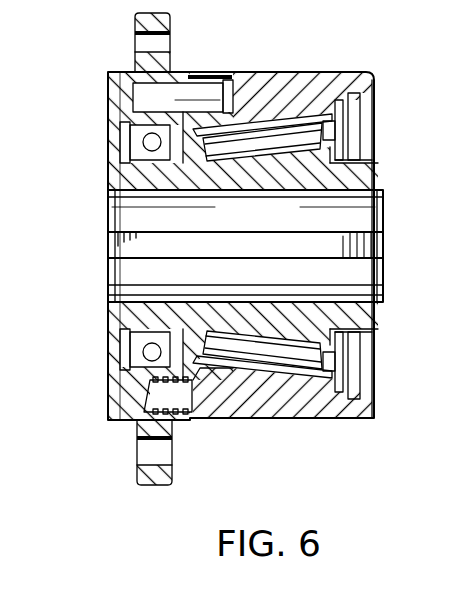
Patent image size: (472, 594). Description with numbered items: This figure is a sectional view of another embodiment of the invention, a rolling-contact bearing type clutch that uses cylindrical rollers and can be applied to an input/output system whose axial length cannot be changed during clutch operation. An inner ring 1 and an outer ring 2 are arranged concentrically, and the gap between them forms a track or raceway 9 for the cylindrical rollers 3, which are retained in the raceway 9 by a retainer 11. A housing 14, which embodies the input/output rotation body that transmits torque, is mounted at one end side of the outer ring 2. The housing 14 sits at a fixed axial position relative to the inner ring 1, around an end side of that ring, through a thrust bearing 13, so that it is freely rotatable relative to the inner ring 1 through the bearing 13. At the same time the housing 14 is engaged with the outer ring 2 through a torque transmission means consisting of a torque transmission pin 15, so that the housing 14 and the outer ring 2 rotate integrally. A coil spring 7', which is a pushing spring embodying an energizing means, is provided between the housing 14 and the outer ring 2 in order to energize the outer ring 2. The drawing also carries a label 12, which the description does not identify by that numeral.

The inner ring 1 is at (380, 168).
The outer ring 2 is at (302, 76).
The cylindrical rollers 3 is at (312, 373).
The coil spring 7' is at (186, 436).
The raceway 9 is at (330, 152).
The retainer 11 is at (322, 375).
The bearing cover plate 12 is at (344, 95).
The thrust bearing 13 is at (148, 136).
The housing 14 is at (112, 112).
The torque transmission pin 15 is at (167, 88).